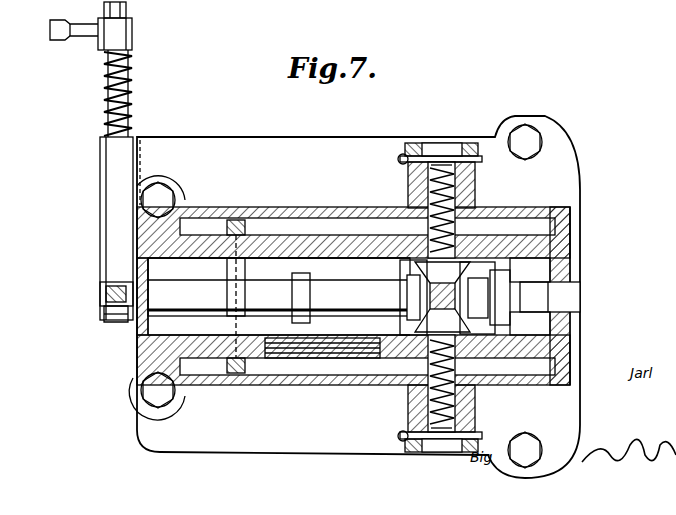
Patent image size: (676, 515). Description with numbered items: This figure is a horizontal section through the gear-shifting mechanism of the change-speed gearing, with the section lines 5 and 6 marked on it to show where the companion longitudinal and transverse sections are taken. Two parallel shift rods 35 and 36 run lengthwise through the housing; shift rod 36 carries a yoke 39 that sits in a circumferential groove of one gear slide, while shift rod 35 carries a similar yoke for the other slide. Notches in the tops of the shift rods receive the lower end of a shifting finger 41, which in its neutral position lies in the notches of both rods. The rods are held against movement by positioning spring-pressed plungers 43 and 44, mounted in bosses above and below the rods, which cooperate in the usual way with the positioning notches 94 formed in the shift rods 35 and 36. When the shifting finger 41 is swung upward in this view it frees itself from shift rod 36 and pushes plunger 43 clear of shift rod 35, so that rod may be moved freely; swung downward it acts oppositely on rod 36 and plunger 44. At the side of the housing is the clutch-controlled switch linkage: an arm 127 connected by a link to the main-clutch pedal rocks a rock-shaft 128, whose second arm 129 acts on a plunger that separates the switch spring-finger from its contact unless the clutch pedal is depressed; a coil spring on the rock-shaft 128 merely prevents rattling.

The shift rod 35 is at (340, 262).
The shift rod 36 is at (358, 333).
The yoke 39 is at (243, 222).
The shifting finger 41 is at (412, 362).
The spring-pressed plunger 43 is at (470, 203).
The spring-pressed plunger 44 is at (477, 402).
The positioning notches 94 is at (512, 272).
The arm 127 is at (88, 40).
The rock-shaft 128 is at (127, 90).
The arm 129 is at (100, 322).
The section line 5— 5 is at (135, 295).
The section line 6— 6 is at (442, 488).